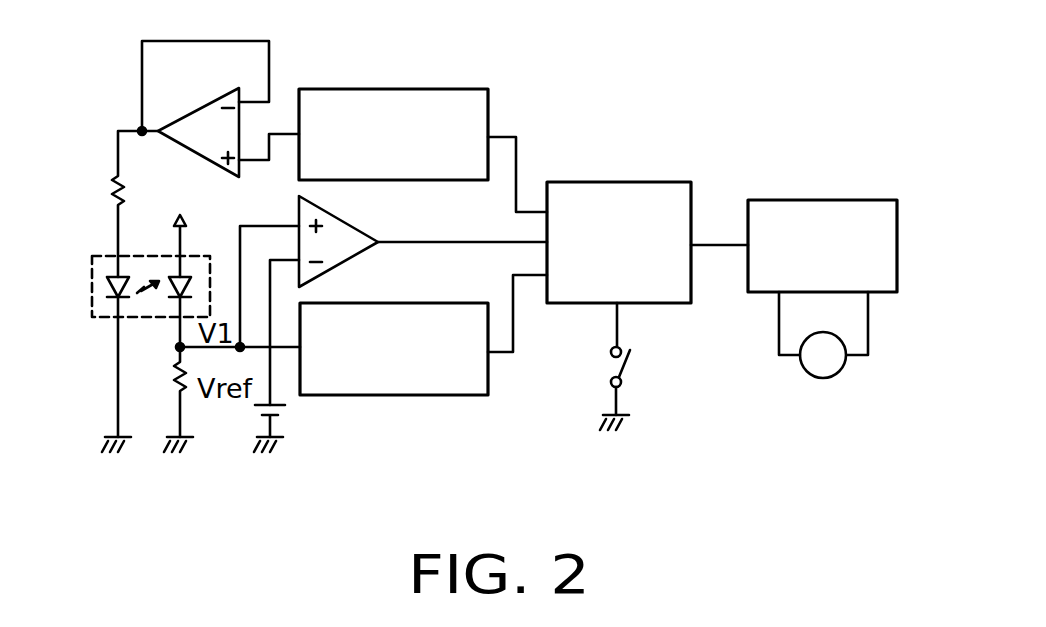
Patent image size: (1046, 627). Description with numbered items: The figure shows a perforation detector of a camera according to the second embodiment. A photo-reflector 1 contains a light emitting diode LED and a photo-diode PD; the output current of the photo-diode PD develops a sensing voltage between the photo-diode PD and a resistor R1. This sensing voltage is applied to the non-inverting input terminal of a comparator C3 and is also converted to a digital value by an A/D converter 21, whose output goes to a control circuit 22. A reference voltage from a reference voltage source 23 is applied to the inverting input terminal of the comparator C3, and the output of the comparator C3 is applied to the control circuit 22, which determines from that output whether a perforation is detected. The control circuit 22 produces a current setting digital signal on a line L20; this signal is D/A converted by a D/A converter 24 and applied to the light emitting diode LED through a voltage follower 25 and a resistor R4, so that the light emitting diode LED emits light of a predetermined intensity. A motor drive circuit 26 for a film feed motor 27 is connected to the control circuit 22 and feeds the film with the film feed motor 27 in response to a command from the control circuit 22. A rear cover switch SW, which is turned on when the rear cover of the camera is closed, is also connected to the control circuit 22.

The photo-reflector 1 is at (134, 326).
The A/D converter 21 is at (425, 303).
The control circuit 22 is at (625, 182).
The reference voltage source 23 is at (282, 412).
The D/A converter 24 is at (430, 89).
The voltage follower 25 is at (190, 110).
The motor drive circuit 26 is at (838, 200).
The film feed motor 27 is at (823, 378).
The resistor R4 is at (124, 181).
The resistor R1 is at (173, 378).
The comparator C3 is at (352, 220).
The light emitting diode LED is at (105, 290).
The photo-diode PD is at (189, 273).
The rear cover switch SW is at (632, 367).
The line L20 is at (520, 160).